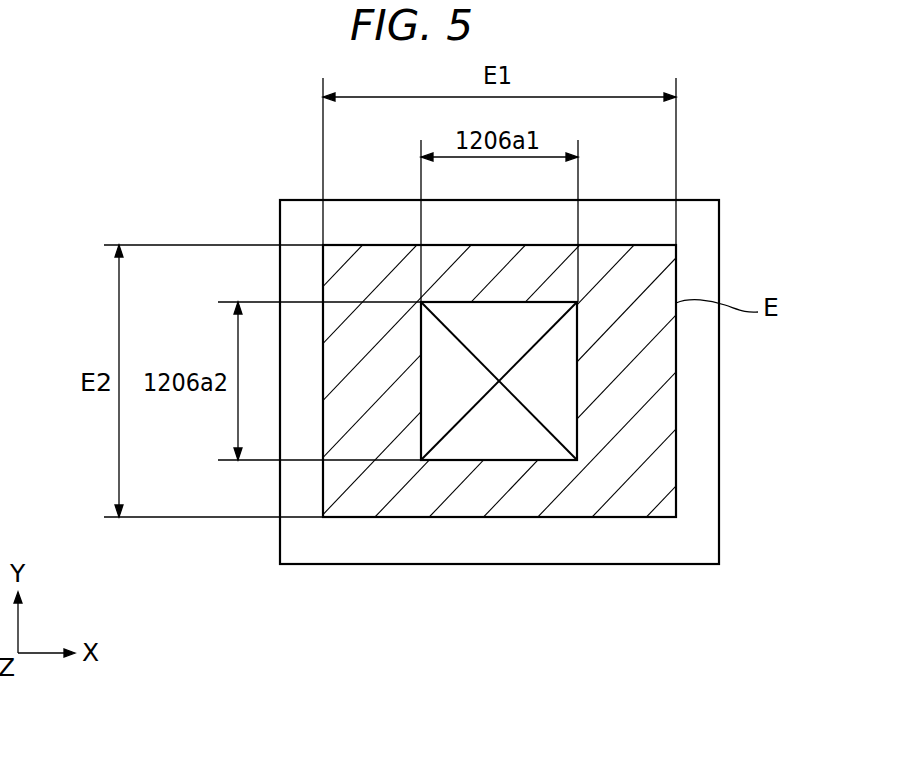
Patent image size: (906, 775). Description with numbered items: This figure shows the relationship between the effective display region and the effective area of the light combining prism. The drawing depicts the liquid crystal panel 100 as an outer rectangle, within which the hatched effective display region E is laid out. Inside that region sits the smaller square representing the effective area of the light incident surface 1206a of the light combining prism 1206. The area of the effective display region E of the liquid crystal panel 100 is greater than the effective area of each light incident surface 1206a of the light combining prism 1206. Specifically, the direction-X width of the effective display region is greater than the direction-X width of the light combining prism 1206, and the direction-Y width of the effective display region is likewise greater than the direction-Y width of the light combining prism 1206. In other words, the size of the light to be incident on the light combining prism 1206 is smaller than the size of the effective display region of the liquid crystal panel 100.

The liquid crystal panel 100 is at (697, 200).
The light combining prism 1206 is at (577, 383).
The light incident surface 1206a is at (509, 441).